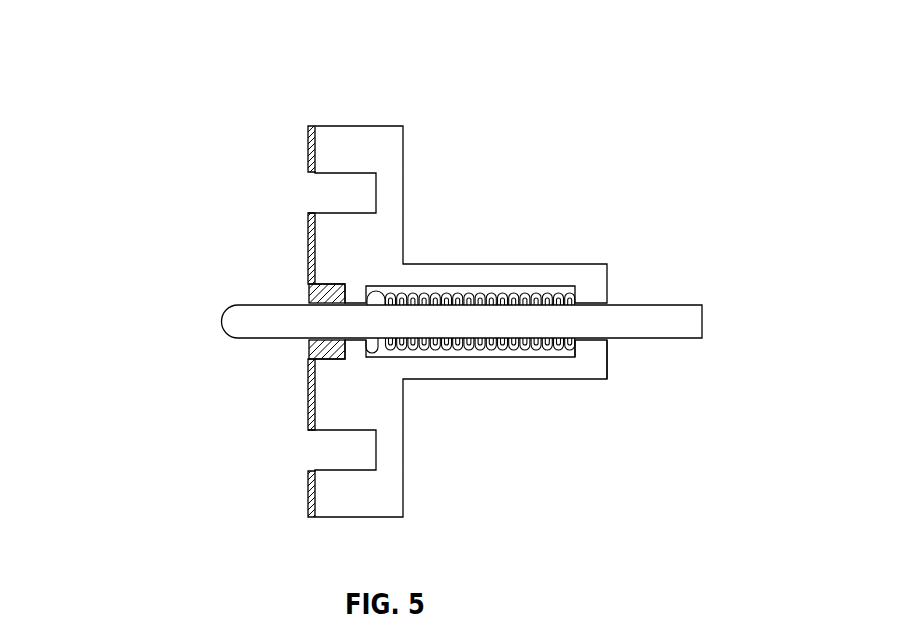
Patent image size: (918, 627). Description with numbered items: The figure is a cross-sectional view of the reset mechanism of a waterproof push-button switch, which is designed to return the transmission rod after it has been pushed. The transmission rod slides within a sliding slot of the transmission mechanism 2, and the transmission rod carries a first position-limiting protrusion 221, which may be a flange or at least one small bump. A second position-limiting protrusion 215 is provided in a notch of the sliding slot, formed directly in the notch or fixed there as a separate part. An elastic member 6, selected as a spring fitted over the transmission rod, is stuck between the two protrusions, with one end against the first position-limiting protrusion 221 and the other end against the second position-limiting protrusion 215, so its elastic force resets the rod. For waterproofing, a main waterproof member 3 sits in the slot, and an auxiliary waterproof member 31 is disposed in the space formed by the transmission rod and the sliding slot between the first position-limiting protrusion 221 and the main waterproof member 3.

The transmission mechanism 2 is at (375, 150).
The main waterproof member 3 is at (308, 262).
The auxiliary waterproof member 31 is at (336, 295).
The first position-limiting protrusion 221 is at (366, 344).
The elastic member 6 is at (540, 297).
The second position-limiting protrusion 215 is at (580, 352).